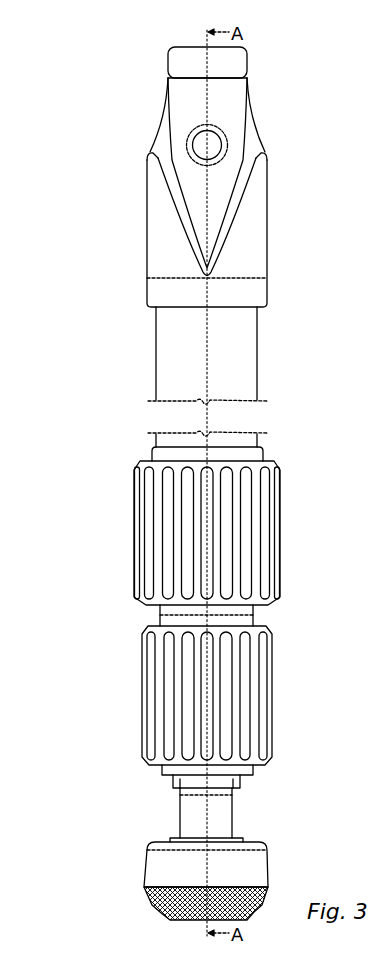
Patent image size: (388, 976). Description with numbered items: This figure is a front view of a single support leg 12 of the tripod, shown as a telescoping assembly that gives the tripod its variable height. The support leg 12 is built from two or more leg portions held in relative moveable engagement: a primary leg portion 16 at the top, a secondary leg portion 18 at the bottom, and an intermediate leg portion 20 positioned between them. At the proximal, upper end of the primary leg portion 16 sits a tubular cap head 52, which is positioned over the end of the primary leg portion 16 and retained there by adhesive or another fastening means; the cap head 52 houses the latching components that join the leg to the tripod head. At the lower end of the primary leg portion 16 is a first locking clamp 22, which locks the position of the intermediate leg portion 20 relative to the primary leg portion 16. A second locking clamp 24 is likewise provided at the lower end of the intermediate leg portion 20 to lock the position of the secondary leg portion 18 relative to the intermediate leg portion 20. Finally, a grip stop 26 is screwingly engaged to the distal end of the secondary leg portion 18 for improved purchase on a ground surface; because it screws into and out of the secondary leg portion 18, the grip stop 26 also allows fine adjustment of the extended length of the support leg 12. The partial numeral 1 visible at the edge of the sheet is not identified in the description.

The cap head 52 is at (230, 110).
The support leg 12 is at (314, 140).
The primary leg portion 16 is at (250, 373).
The first locking clamp 22 is at (260, 558).
The intermediate leg portion 20 is at (252, 625).
The second locking clamp 24 is at (260, 707).
The secondary leg portion 18 is at (246, 778).
The grip stop 26 is at (257, 857).
The partially visible numeral 1 is at (383, 461).